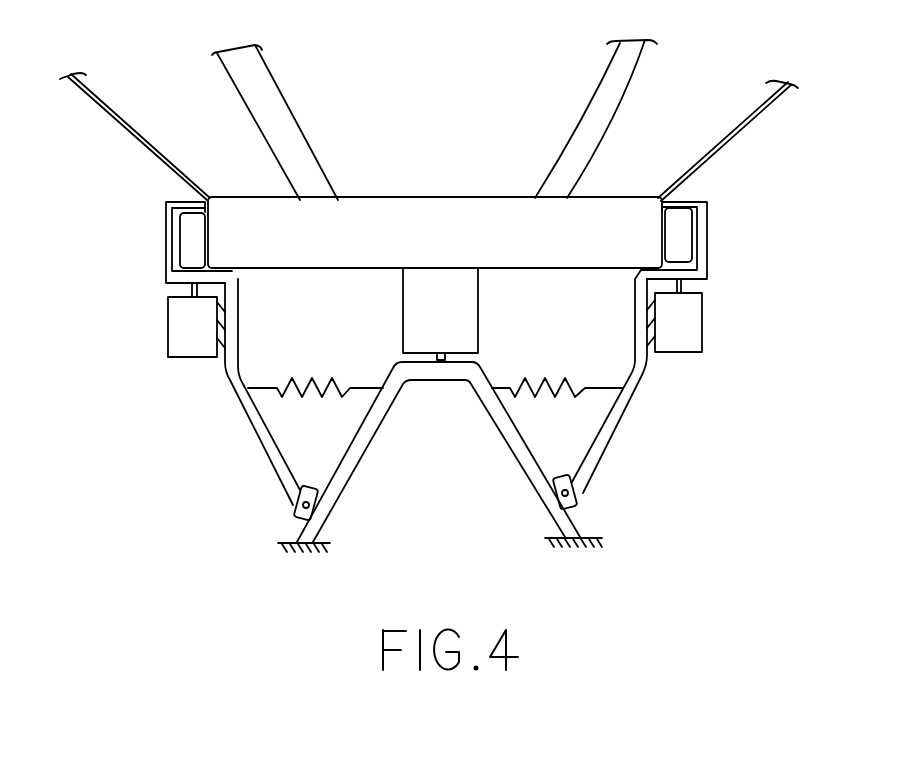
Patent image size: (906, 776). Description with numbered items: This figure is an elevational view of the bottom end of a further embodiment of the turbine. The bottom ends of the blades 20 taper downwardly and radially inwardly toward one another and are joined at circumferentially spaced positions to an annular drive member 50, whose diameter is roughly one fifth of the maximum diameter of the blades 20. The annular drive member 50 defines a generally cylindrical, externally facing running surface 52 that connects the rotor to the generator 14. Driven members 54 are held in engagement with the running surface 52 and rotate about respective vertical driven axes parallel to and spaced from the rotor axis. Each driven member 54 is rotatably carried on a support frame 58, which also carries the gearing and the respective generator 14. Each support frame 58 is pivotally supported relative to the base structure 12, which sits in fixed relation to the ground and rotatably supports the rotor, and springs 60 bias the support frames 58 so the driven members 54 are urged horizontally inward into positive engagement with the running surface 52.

The blades 20 is at (113, 103).
The annular drive member 50 is at (438, 218).
The running surface 52 is at (185, 235).
The driven members 54 is at (182, 252).
The generator 14 is at (189, 345).
The support frames 58 is at (260, 437).
The springs 60 is at (318, 380).
The base structure 12 is at (427, 384).